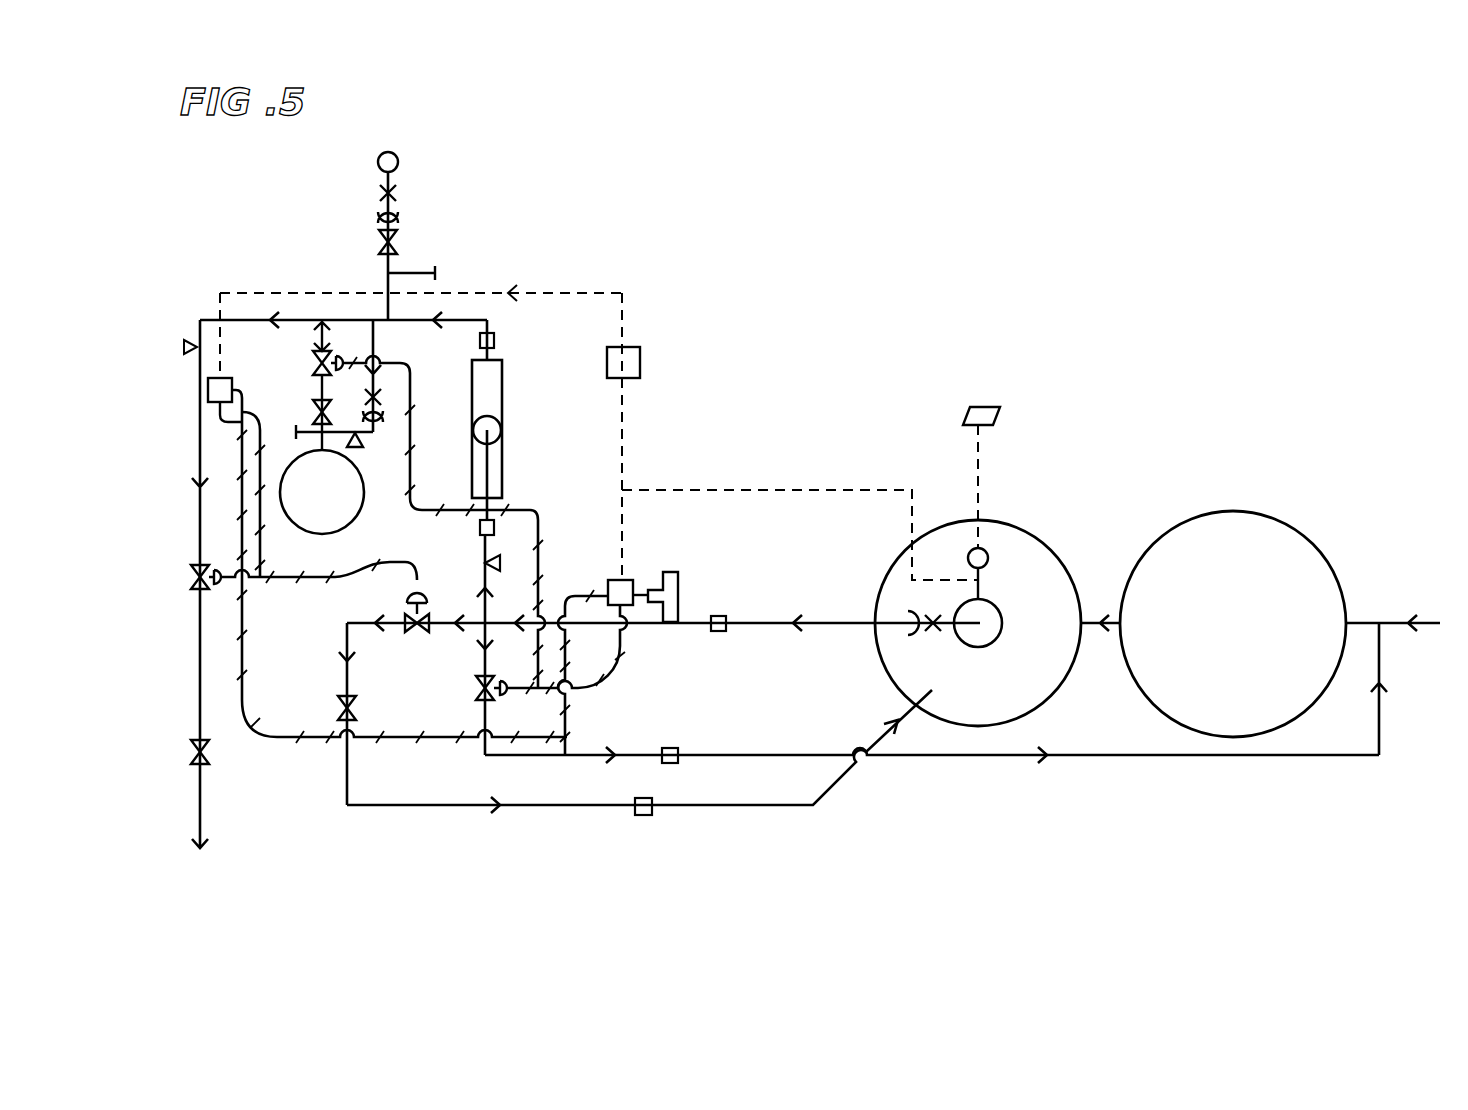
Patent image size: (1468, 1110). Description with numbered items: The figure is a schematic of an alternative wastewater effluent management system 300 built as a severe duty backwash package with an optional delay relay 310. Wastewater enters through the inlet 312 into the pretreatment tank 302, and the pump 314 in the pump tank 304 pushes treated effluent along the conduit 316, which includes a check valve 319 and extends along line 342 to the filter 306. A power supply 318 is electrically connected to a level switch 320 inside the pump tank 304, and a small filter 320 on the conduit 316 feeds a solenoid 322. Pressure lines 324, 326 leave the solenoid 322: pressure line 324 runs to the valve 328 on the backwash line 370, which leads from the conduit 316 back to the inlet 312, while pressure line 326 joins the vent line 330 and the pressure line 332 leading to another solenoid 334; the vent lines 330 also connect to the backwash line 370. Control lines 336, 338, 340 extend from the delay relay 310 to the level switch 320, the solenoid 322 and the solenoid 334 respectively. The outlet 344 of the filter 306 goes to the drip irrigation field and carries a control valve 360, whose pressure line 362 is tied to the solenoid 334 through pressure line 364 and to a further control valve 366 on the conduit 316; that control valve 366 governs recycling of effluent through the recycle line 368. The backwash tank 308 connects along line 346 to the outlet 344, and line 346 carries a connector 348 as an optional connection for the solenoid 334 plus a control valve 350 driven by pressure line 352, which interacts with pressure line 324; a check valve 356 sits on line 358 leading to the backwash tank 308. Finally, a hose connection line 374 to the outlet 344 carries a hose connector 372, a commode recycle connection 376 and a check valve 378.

The effluent management system 300 is at (1135, 485).
The pretreatment tank 302 is at (1262, 540).
The pump tank 304 is at (1028, 555).
The filter 306 is at (500, 392).
The backwash tank 308 is at (343, 512).
The delay relay 310 is at (640, 362).
The inlet 312 is at (1380, 622).
The pump 314 is at (996, 630).
The conduit 316 is at (830, 625).
The power supply 318 is at (1000, 407).
The check valve 319 is at (935, 632).
The level switch 320 is at (680, 605).
The solenoid 322 is at (628, 580).
The pressure line 324 is at (610, 662).
The pressure line 326 is at (585, 597).
The valve 328 is at (480, 690).
The vent line 330 is at (570, 738).
The pressure line 332 is at (300, 740).
The solenoid 334 is at (208, 388).
The control line 336 is at (820, 490).
The control line 338 is at (624, 423).
The control line 340 is at (622, 293).
The line 342 is at (483, 590).
The outlet 344 is at (455, 318).
The line 346 is at (322, 390).
The connector 348 is at (296, 428).
The control valve 350 is at (322, 358).
The pressure line 352 is at (378, 365).
The check valve 356 is at (381, 400).
The line 358 is at (375, 433).
The control valve 360 is at (198, 578).
The pressure line 362 is at (343, 580).
The pressure line 364 is at (218, 412).
The control valve 366 is at (417, 633).
The recycle line 368 is at (565, 805).
The backwash line 370 is at (740, 755).
The hose connector 372 is at (398, 160).
The hose connection line 374 is at (388, 283).
The commode recycle connection 376 is at (436, 272).
The check valve 378 is at (398, 210).